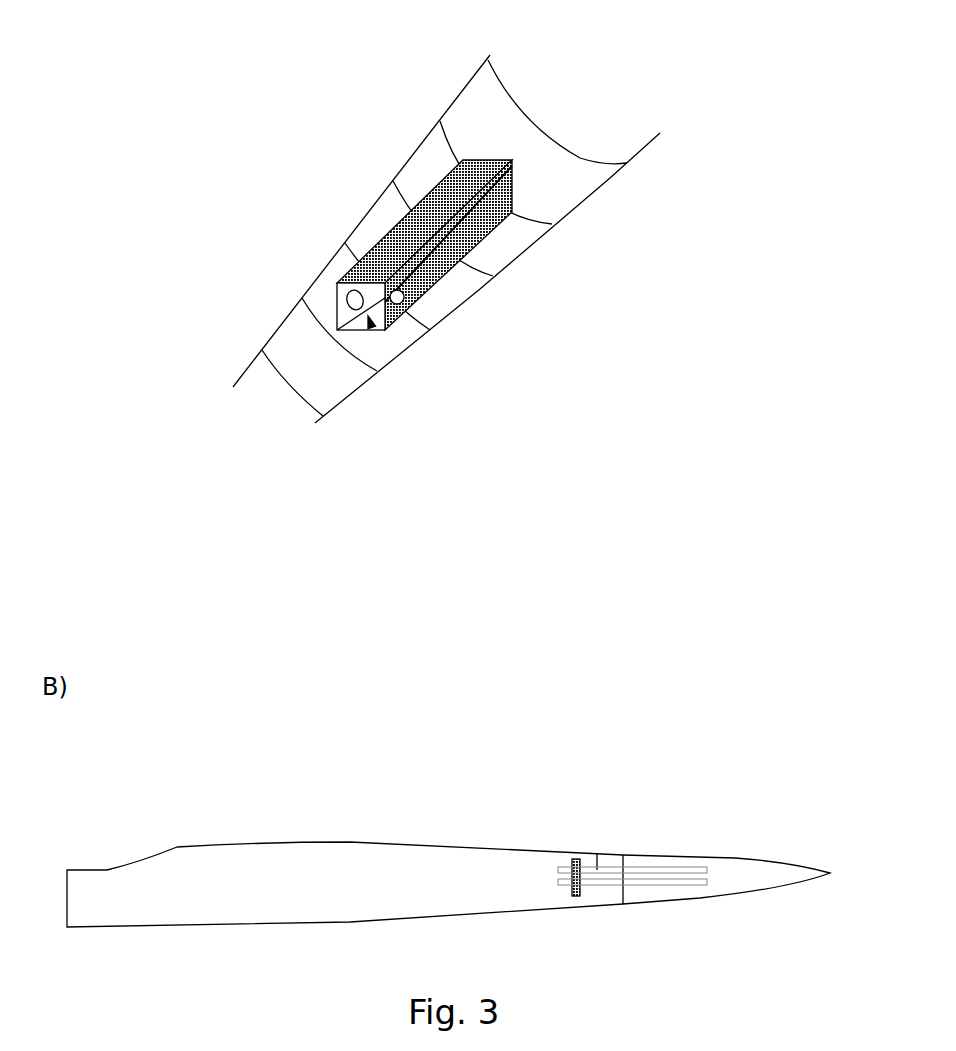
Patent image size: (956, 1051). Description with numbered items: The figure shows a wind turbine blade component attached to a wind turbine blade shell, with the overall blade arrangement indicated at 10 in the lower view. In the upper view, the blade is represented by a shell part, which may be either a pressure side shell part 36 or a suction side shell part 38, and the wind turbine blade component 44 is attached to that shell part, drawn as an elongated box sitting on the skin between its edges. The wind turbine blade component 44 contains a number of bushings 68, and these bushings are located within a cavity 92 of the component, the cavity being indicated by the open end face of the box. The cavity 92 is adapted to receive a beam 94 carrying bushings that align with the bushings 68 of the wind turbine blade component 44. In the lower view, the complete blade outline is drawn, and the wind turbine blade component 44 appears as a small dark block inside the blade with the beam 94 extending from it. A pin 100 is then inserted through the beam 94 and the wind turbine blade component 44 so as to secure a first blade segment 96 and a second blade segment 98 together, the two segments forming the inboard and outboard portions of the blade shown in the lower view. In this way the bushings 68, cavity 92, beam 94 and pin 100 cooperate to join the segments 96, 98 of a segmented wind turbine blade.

The wing 10 is at (228, 786).
The pressure side shell part 36 is at (446, 250).
The suction side shell part 38 is at (480, 420).
The wind turbine blade component 44 is at (401, 167).
The bushings 68 is at (352, 292).
The cavity 92 is at (372, 327).
The beam 94 is at (652, 872).
The first blade segment 96 is at (352, 842).
The second blade segment 98 is at (735, 858).
The pin 100 is at (584, 898).